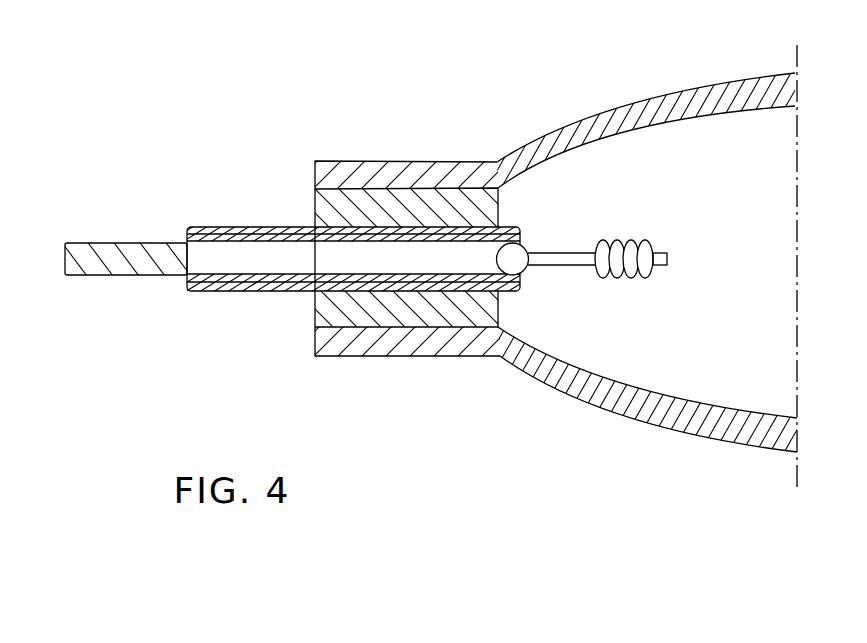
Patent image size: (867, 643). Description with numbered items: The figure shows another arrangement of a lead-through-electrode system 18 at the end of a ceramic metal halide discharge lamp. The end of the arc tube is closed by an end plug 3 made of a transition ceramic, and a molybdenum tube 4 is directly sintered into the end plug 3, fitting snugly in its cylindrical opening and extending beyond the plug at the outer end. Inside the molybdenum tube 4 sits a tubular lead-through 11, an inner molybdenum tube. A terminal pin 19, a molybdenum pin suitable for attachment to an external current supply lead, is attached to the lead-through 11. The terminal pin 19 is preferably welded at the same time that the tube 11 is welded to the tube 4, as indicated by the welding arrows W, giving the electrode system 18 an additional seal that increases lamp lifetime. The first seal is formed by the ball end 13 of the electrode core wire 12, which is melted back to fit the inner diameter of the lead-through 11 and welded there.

The end plug 3 is at (358, 212).
The molybdenum tube 4 is at (242, 293).
The tubular lead-through 11 is at (224, 246).
The electrode core wire 12 is at (582, 252).
The ball end 13 is at (513, 262).
The electrode system 18 is at (528, 205).
The terminal pin 19 is at (77, 275).
The welding arrows W is at (166, 215).